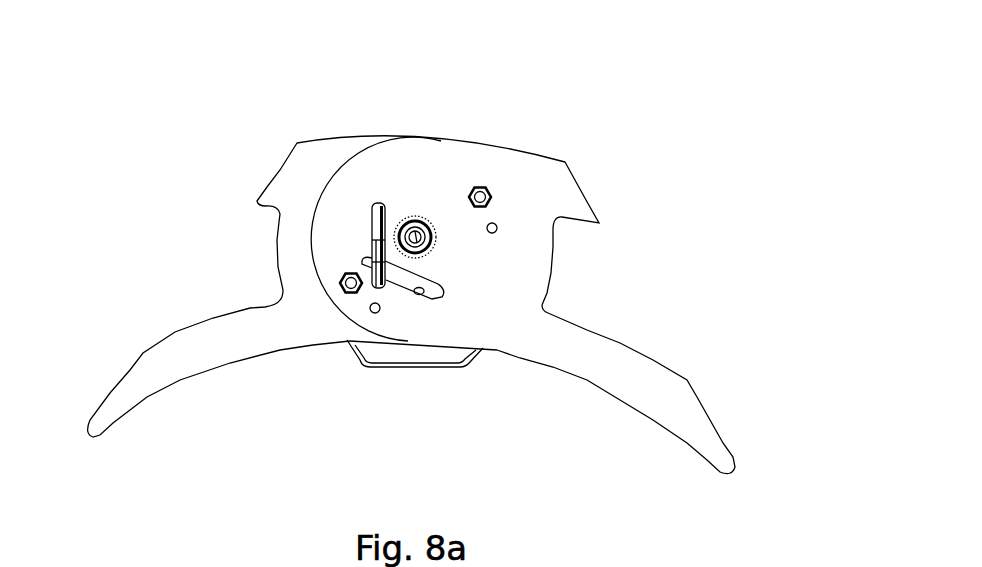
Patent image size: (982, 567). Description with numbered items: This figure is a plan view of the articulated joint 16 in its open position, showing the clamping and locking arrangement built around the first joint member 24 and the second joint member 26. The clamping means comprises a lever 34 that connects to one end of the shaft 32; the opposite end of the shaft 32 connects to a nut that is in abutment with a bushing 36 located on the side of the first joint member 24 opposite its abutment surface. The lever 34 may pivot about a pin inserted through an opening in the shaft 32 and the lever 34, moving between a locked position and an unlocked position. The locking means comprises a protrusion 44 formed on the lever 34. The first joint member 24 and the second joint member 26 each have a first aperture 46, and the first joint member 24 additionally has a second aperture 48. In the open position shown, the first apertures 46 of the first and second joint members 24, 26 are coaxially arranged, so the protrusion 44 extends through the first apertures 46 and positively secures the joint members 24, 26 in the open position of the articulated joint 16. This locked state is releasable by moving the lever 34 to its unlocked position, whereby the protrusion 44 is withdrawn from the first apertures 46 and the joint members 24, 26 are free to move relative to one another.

The articulated joint 16 is at (194, 141).
The first joint member 24 is at (628, 365).
The second joint member 26 is at (240, 338).
The shaft 32 is at (384, 214).
The lever 34 is at (417, 368).
The bushing 36 is at (433, 250).
The protrusion 44 is at (373, 225).
The first aperture 46 is at (408, 230).
The second aperture 48 is at (404, 283).